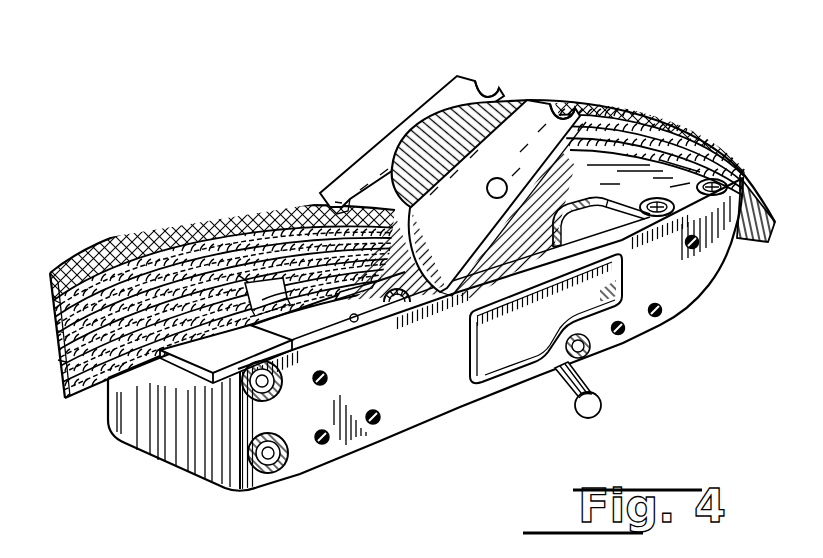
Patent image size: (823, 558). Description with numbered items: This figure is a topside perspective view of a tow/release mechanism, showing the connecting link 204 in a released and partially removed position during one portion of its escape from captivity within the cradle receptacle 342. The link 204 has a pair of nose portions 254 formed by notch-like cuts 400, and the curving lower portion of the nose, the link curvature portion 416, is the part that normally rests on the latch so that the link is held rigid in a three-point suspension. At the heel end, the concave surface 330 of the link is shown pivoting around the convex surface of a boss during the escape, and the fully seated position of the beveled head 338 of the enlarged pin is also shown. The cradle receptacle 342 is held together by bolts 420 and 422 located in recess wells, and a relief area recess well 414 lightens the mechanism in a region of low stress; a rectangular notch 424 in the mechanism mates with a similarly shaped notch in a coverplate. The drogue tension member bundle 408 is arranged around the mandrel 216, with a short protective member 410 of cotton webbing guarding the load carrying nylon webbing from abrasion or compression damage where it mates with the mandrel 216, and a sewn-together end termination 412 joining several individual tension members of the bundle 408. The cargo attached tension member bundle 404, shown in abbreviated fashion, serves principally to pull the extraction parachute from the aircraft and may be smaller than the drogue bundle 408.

The link 204 is at (410, 128).
The mandrel 216 is at (349, 305).
The link nose portions 254 is at (560, 102).
The concave surface 330 is at (355, 320).
The beveled head 338 is at (397, 313).
The cradle receptacle 342 is at (442, 384).
The notch-like cuts 400 is at (478, 82).
The cargo attached tension member bundle 404 is at (650, 113).
The tension member bundle 408 is at (107, 247).
The protective member 410 is at (262, 295).
The sewn-together end termination 412 is at (266, 305).
The relief area recess well 414 is at (522, 344).
The link curvature portion 416 is at (575, 155).
The recess well bolt 420 is at (278, 470).
The recess well bolt 422 is at (245, 392).
The rectangular notch 424 is at (641, 231).